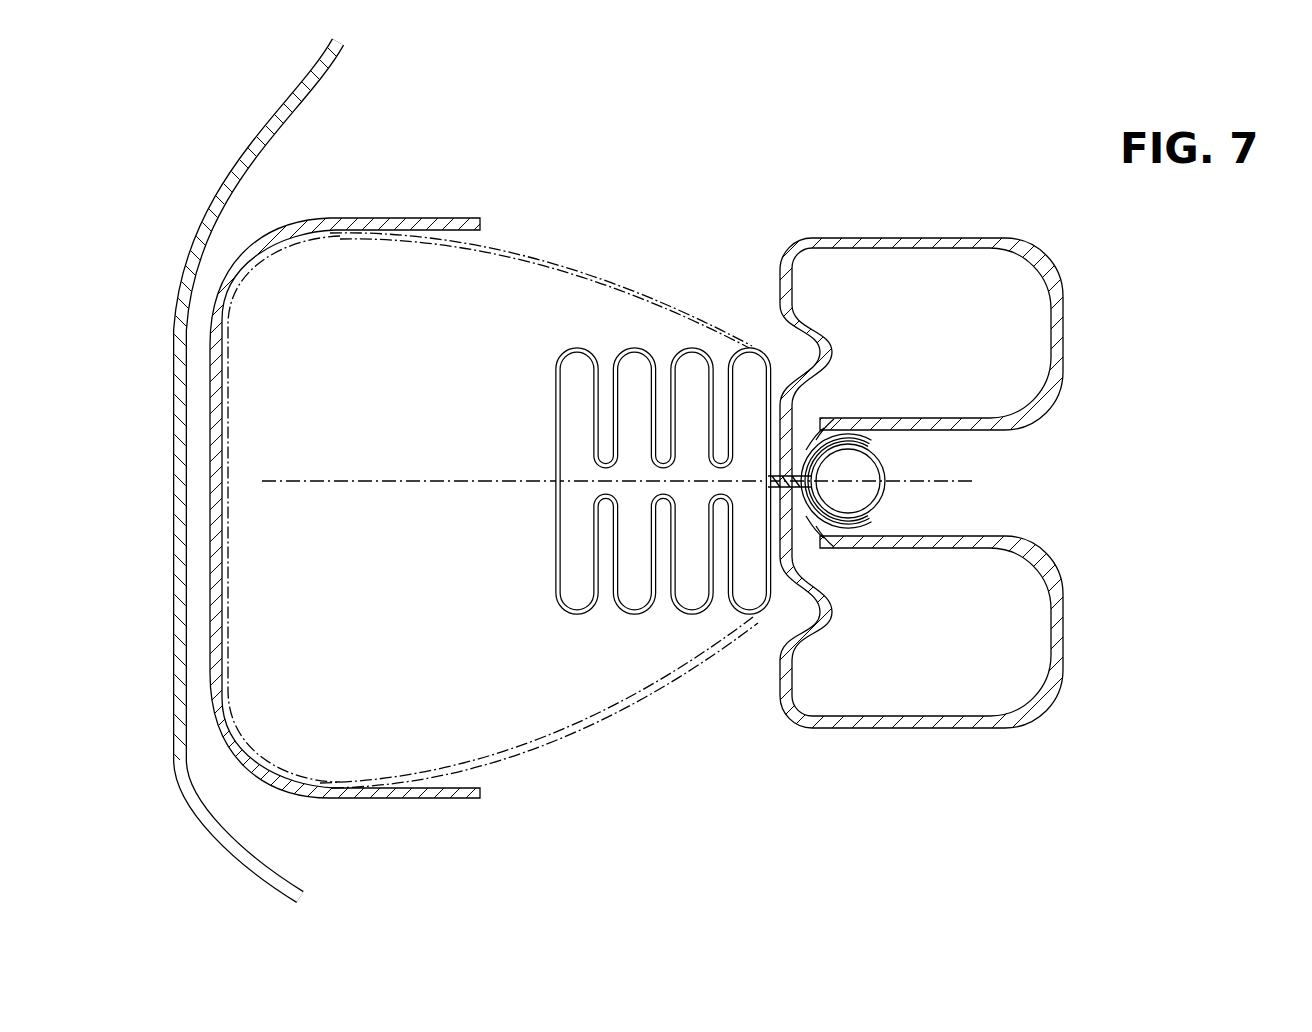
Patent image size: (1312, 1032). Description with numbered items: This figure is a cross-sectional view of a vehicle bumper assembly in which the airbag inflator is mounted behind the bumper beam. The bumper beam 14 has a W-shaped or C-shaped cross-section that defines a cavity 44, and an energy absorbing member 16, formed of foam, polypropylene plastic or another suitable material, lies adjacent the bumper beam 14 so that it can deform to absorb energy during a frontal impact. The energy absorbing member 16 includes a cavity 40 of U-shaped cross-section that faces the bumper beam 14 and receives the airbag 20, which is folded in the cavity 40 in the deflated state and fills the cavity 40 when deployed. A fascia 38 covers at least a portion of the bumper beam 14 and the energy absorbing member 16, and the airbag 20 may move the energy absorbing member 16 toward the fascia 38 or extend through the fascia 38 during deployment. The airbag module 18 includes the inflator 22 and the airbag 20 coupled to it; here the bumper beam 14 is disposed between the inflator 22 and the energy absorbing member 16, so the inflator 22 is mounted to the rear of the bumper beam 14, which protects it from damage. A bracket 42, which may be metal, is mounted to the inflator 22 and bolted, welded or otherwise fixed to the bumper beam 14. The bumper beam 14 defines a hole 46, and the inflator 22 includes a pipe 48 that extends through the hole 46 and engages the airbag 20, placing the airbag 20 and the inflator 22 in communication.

The bumper beam 14 is at (858, 238).
The energy absorbing member 16 is at (398, 218).
The airbag module 18 is at (896, 516).
The airbag 20 is at (632, 615).
The inflator 22 is at (883, 501).
The fascia 38 is at (193, 231).
The cavity 40 is at (458, 302).
The bracket 42 is at (838, 541).
The cavity 44 is at (977, 522).
The hole 46 is at (778, 476).
The pipe 48 is at (806, 540).